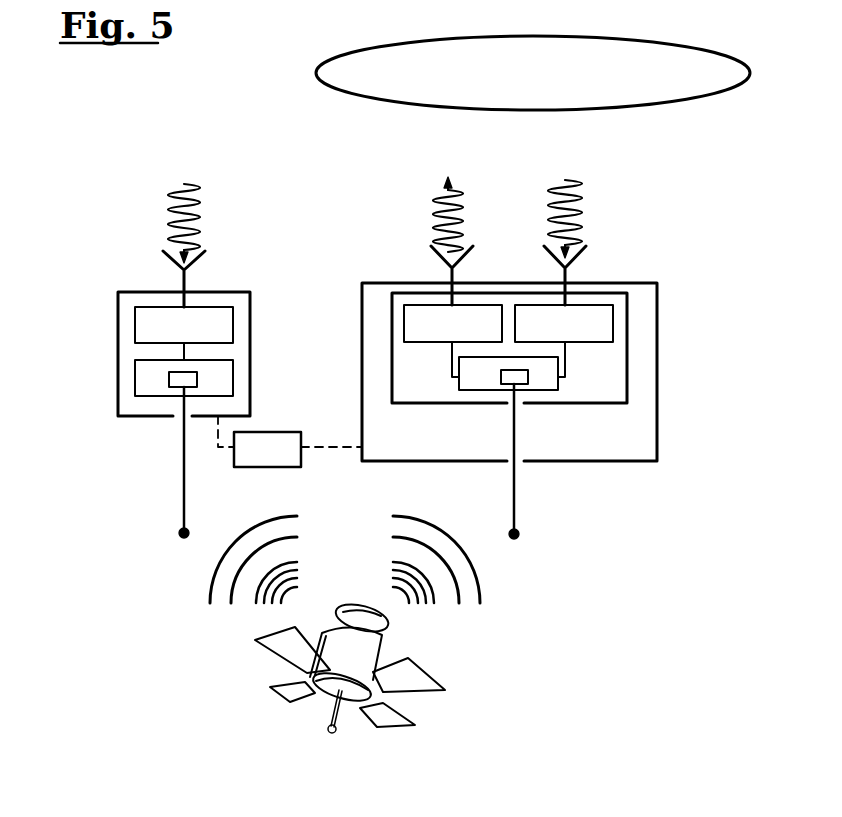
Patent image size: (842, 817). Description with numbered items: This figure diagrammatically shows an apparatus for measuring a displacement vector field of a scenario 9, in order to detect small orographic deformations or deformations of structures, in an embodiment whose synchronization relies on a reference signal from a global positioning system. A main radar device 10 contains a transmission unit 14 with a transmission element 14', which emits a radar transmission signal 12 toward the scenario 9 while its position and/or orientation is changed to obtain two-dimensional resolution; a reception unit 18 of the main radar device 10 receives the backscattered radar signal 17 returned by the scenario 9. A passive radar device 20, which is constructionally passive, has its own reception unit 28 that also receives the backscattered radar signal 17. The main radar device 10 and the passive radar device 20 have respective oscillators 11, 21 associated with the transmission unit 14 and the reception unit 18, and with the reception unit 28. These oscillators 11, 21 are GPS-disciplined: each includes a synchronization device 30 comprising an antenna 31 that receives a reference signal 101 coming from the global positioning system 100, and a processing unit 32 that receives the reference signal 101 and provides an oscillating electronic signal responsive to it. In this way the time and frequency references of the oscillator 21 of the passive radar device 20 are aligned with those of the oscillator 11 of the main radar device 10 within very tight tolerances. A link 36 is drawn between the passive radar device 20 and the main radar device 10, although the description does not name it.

The scenario 9 is at (342, 95).
The main radar device 10 is at (643, 275).
The oscillator 11 is at (571, 393).
The radar transmission signal 12 is at (433, 223).
The transmission unit 14 is at (470, 348).
The transmission element 14' is at (471, 265).
The backscattered radar signal 17 is at (172, 223).
The reception unit 18 is at (612, 328).
The passive radar device 20 is at (233, 292).
The oscillator 21 is at (236, 404).
The reception unit 28 is at (233, 330).
The synchronization device 30 is at (164, 450).
The antenna 31 is at (180, 497).
The processing unit 32 is at (170, 380).
The connection 36 is at (303, 459).
The global positioning system 100 is at (246, 682).
The reference signal 101 is at (210, 585).